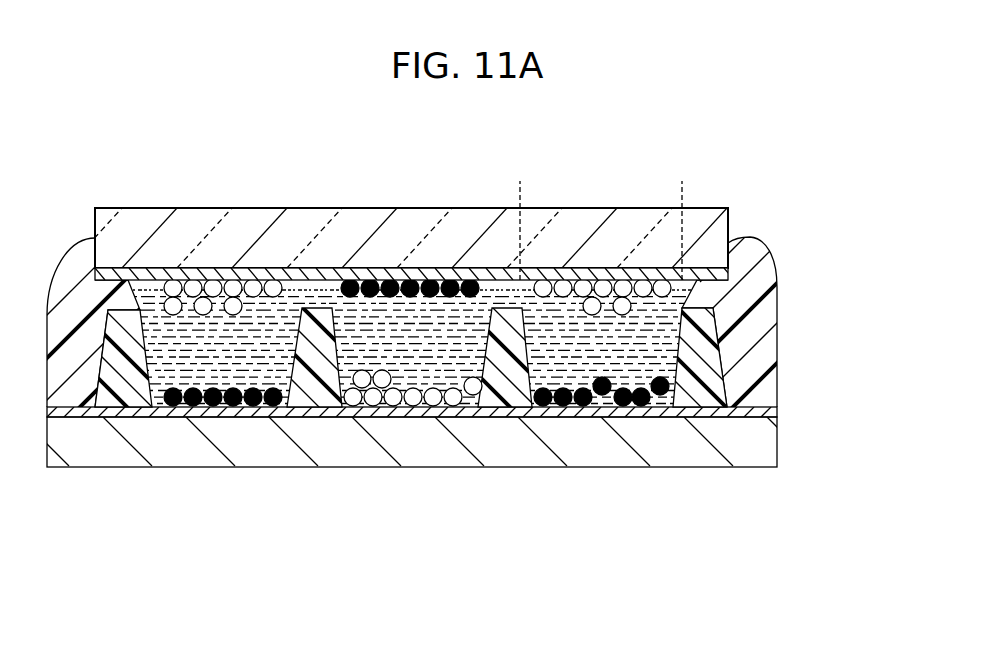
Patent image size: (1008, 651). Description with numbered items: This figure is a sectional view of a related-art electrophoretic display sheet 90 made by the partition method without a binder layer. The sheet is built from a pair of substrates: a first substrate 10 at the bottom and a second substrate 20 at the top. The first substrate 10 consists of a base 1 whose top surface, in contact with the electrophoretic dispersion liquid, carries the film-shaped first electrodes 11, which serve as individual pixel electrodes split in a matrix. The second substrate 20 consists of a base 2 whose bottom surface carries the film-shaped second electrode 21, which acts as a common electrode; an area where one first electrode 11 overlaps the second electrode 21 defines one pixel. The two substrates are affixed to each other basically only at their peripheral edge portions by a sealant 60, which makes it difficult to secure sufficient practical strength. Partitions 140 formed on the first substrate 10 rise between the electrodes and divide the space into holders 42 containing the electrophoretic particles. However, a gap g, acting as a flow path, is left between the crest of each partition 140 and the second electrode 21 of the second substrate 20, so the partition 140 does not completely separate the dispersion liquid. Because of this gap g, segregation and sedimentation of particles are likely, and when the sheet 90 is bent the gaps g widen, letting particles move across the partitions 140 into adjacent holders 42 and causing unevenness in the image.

The electrophoretic display sheet 90 is at (755, 150).
The second substrate 20 is at (830, 210).
The base 2 is at (718, 227).
The second electrode 21 is at (719, 266).
The holder 42 is at (520, 181).
The sealant 60 is at (763, 325).
The first substrate 10 is at (843, 416).
The first electrode 11 is at (645, 415).
The base 1 is at (752, 447).
The partition 140 is at (121, 388).
The gap g is at (318, 298).